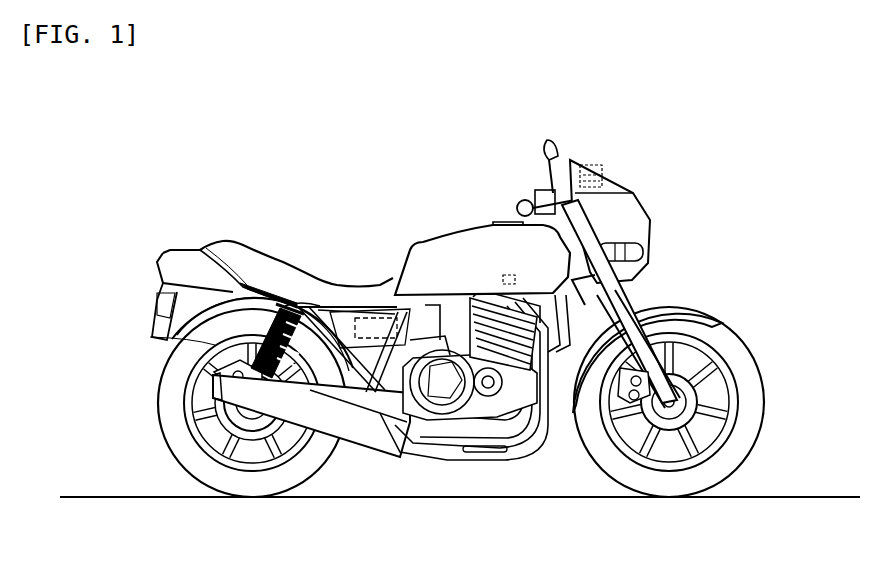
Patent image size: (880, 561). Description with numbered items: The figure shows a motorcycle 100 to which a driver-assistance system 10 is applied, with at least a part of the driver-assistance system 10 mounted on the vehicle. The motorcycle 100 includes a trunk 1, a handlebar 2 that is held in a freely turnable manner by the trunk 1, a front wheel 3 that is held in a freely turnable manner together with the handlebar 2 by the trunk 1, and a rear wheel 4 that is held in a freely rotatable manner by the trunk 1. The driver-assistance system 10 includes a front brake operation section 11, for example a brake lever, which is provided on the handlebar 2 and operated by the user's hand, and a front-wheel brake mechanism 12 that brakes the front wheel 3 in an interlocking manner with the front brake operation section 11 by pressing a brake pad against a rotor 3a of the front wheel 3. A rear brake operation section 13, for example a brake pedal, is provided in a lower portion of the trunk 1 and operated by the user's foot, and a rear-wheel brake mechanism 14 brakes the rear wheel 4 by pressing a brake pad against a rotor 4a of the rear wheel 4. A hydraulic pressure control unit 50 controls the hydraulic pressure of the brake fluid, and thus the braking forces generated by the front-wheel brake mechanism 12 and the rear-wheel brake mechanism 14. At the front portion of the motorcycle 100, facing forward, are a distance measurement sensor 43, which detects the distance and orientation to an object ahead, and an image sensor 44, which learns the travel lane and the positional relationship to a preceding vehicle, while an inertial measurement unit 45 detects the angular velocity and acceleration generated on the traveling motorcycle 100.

The motorcycle 100 is at (743, 104).
The trunk 1 is at (350, 287).
The handlebar 2 is at (527, 198).
The front wheel 3 is at (767, 459).
The rotor 3a is at (700, 393).
The rear wheel 4 is at (158, 451).
The rotor 4a is at (198, 405).
The driver-assistance system 10 is at (677, 270).
The front brake operation section 11 is at (573, 163).
The front-wheel brake mechanism 12 is at (697, 358).
The rear brake operation section 13 is at (400, 422).
The rear-wheel brake mechanism 14 is at (206, 357).
The distance measurement sensor 43 is at (602, 184).
The image sensor 44 is at (600, 172).
The inertial measurement unit 45 is at (508, 273).
The hydraulic pressure control unit 50 is at (380, 300).